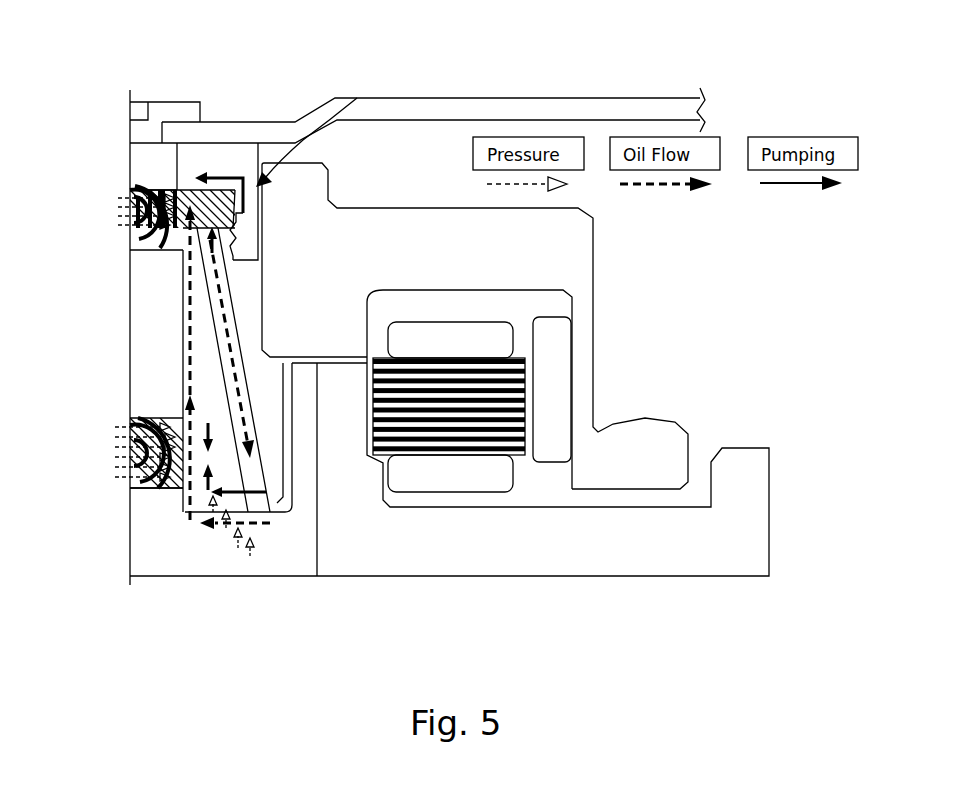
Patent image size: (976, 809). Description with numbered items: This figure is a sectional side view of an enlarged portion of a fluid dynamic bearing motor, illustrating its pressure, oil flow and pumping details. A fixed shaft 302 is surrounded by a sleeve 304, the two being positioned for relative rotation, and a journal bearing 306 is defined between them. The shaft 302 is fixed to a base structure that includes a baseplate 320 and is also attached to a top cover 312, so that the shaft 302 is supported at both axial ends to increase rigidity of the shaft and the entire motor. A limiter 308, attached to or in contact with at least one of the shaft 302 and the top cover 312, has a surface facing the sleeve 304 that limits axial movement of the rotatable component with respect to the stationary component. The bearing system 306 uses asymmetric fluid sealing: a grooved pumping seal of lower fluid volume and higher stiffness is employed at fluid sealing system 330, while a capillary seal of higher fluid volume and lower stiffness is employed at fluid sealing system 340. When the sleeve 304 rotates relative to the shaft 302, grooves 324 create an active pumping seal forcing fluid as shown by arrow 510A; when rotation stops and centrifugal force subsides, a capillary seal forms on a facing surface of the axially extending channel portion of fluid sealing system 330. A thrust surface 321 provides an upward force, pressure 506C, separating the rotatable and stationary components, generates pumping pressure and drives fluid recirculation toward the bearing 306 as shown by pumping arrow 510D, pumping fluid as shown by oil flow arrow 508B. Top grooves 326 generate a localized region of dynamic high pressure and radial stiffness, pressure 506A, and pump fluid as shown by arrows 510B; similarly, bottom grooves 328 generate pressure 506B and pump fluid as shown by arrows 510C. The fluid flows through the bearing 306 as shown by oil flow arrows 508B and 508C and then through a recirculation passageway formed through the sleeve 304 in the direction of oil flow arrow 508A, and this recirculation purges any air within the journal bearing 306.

The shaft 302 is at (170, 290).
The sleeve 304 is at (215, 340).
The journal bearing 306 is at (182, 358).
The limiter 308 is at (210, 190).
The top cover 312 is at (515, 99).
The baseplate 320 is at (538, 550).
The thrust surface 321 is at (190, 530).
The grooves 324 is at (240, 160).
The top grooves 326 is at (135, 190).
The bottom grooves 328 is at (153, 492).
The fluid sealing system 330 is at (262, 203).
The fluid sealing system 340 is at (310, 502).
The pressure 506A is at (130, 243).
The pressure 506B is at (117, 468).
The pressure 506C is at (222, 520).
The oil flow arrow 508A is at (232, 330).
The oil flow arrow 508B is at (188, 400).
The oil flow arrow 508C is at (165, 190).
The arrow 510A is at (263, 203).
The arrows 510B is at (196, 176).
The arrows 510C is at (204, 497).
The pumping arrow 510D is at (290, 515).